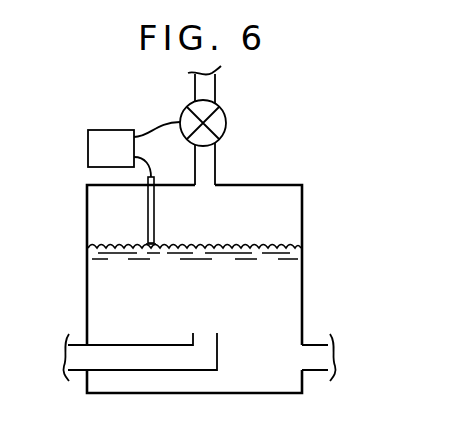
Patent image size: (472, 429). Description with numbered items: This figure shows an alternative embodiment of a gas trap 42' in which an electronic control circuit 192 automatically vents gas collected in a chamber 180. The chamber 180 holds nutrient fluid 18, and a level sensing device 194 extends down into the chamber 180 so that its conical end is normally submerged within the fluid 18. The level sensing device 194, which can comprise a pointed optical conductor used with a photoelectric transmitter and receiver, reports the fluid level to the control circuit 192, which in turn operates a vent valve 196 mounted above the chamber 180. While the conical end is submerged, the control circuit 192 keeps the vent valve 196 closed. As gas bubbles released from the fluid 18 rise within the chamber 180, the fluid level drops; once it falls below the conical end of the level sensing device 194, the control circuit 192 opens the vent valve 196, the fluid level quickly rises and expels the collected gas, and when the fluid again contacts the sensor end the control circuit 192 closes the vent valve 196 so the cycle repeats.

The gas trap 42' is at (196, 229).
The fluid 18 is at (253, 305).
The chamber 180 is at (303, 214).
The electronic control circuit 192 is at (134, 149).
The level sensing device 194 is at (147, 213).
The vent valve 196 is at (225, 115).